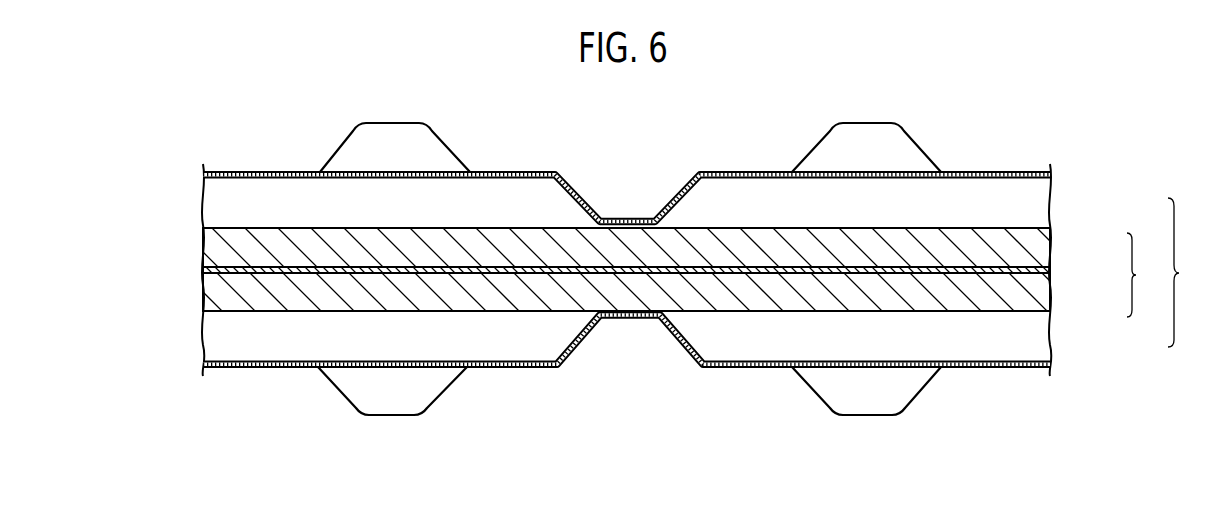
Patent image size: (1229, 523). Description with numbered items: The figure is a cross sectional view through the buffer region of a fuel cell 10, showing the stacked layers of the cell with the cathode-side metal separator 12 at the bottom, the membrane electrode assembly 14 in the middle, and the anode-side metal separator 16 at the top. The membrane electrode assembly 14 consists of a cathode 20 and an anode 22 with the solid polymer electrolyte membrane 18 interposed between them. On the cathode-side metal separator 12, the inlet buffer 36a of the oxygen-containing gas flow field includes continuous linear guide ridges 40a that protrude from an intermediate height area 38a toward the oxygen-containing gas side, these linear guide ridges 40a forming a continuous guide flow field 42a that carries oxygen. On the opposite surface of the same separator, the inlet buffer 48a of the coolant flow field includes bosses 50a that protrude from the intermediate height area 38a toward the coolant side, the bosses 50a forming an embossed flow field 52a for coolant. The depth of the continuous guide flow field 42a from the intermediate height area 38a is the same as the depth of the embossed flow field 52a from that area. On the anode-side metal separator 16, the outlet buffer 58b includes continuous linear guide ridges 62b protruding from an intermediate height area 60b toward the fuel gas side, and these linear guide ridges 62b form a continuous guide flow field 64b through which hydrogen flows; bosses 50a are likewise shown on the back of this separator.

The fuel cell 10 is at (1189, 272).
The cathode-side metal separator 12 is at (1002, 355).
The membrane electrode assembly 14 is at (1145, 275).
The anode-side metal separator 16 is at (1007, 178).
The solid polymer electrolyte membrane 18 is at (1045, 279).
The cathode 20 is at (1027, 296).
The anode 22 is at (1027, 249).
The inlet buffer 36a is at (280, 338).
The intermediate height area 38a is at (786, 386).
The linear guide ridges 40a is at (686, 345).
The continuous guide flow field 42a is at (401, 335).
The inlet buffer 48a is at (490, 380).
The bosses 50a is at (866, 122).
The embossed flow field 52a is at (572, 382).
The outlet buffer 58b is at (496, 193).
The intermediate height area 60b is at (778, 168).
The linear guide ridges 62b is at (668, 210).
The continuous guide flow field 64b is at (401, 208).